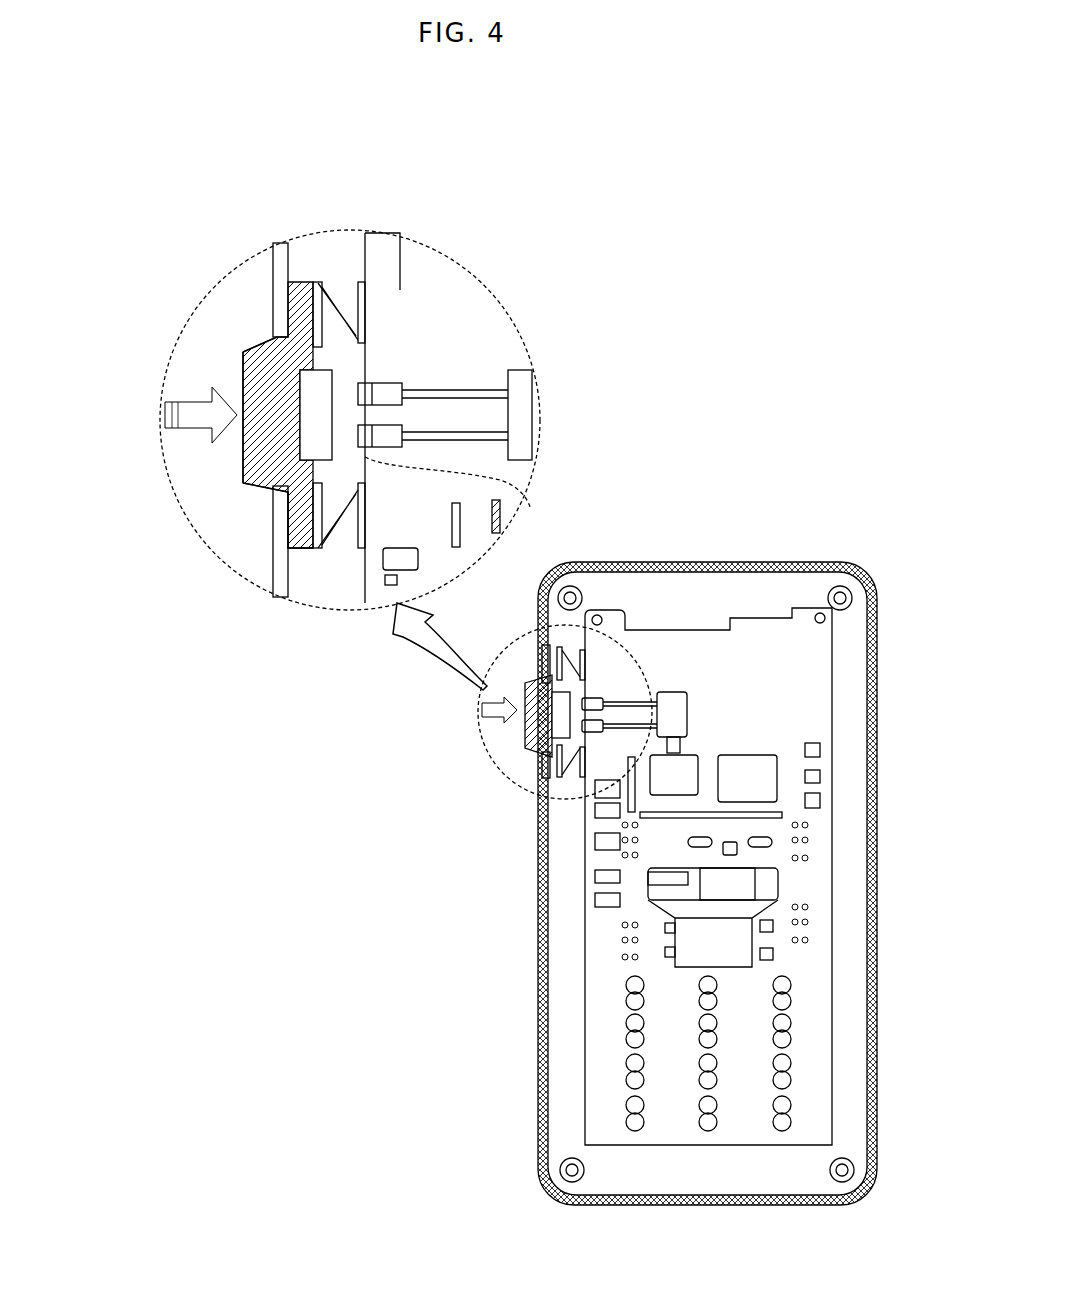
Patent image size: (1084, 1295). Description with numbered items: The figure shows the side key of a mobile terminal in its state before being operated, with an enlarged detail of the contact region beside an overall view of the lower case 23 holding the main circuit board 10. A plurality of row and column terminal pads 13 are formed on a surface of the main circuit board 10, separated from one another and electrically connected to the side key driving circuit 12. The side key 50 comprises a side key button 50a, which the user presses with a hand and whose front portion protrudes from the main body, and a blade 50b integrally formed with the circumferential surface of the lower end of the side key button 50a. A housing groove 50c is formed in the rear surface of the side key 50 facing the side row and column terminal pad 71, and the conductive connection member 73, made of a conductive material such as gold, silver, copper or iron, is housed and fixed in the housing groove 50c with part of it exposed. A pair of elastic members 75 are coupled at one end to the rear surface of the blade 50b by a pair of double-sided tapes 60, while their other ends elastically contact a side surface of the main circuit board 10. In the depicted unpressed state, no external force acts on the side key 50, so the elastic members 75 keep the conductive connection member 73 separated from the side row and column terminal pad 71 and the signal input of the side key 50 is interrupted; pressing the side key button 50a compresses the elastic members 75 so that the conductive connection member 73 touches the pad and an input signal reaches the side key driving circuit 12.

The main circuit board 10 is at (782, 645).
The side key driving circuit 12 is at (680, 690).
The row and column terminal pads 13 is at (535, 392).
The lower case 23 is at (818, 563).
The side key 50 is at (95, 500).
The side key button 50a is at (243, 484).
The blade 50b is at (288, 548).
The housing groove 50c is at (243, 462).
The double-sided tapes 60 is at (279, 242).
The side row and column terminal pad 71 is at (366, 315).
The conductive connection member 73 is at (243, 357).
The elastic members 75 is at (325, 300).